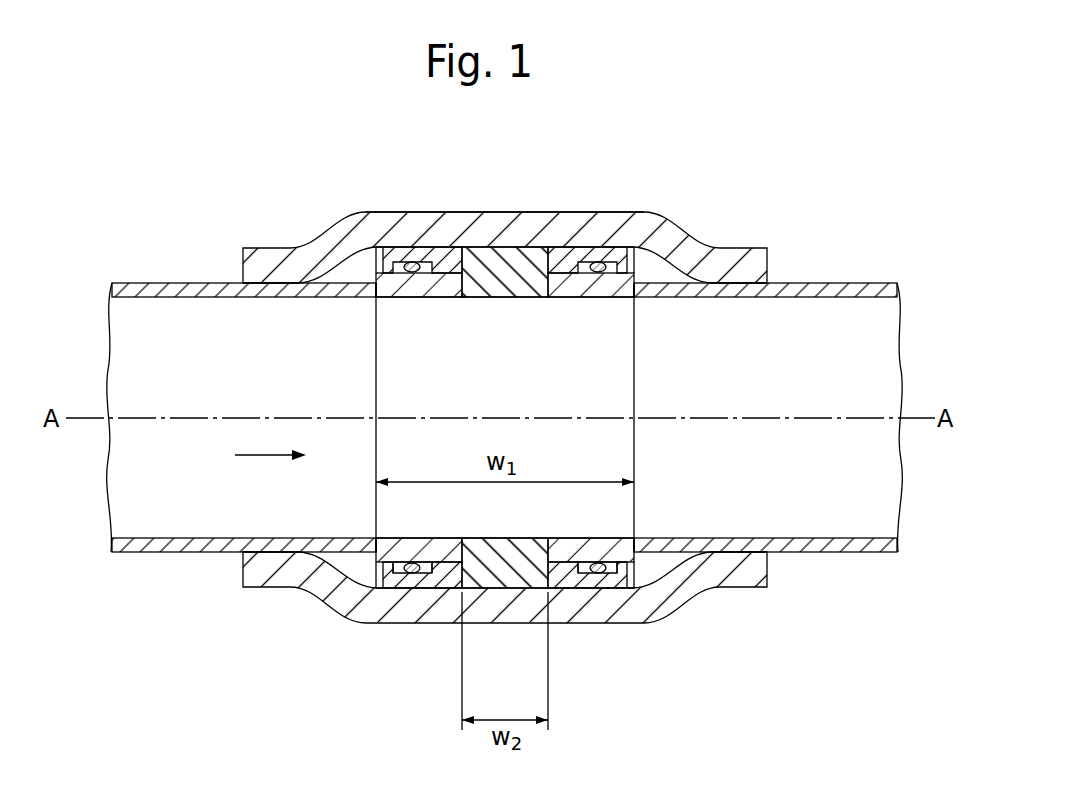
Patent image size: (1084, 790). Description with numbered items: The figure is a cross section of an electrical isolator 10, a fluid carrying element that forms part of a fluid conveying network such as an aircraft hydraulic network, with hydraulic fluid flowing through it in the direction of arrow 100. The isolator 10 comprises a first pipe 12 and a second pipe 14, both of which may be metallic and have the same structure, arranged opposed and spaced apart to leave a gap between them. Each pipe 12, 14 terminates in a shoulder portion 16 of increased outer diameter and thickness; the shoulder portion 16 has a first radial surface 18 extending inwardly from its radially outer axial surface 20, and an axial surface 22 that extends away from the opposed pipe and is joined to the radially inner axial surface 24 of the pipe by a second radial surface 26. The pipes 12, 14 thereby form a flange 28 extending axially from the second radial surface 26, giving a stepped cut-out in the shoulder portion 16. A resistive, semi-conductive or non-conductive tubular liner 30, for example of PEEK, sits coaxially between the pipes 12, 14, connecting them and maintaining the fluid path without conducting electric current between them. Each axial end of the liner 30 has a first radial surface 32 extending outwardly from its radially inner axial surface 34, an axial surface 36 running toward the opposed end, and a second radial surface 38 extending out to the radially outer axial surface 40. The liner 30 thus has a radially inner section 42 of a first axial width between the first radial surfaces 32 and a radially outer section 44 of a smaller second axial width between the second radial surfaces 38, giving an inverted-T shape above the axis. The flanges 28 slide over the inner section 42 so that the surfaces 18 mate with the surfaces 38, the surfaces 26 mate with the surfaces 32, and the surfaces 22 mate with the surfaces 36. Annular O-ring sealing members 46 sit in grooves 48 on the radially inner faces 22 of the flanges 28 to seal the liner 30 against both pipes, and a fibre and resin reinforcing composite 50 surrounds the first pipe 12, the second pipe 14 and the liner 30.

The electrical isolator 10 is at (880, 207).
The first pipe 12 is at (142, 283).
The second pipe 14 is at (883, 283).
The shoulder portion 16 is at (350, 538).
The first radial surface 18 is at (455, 588).
The radially outer axial surface 20 is at (396, 596).
The axial surface 22 is at (378, 247).
The radially inner axial surface 24 is at (258, 297).
The second radial surface 26 is at (378, 290).
The flange 28 is at (404, 584).
The liner 30 is at (495, 538).
The first radial surface 32 is at (374, 291).
The radially inner axial surface 34 is at (517, 297).
The axial surface 36 is at (443, 297).
The second radial surface 38 is at (452, 247).
The radially outer axial surface 40 is at (512, 247).
The radially inner section 42 is at (592, 538).
The radially outer section 44 is at (517, 588).
The sealing member 46 is at (416, 258).
The groove 48 is at (400, 583).
The reinforcing composite 50 is at (338, 232).
The arrow 100 is at (256, 460).